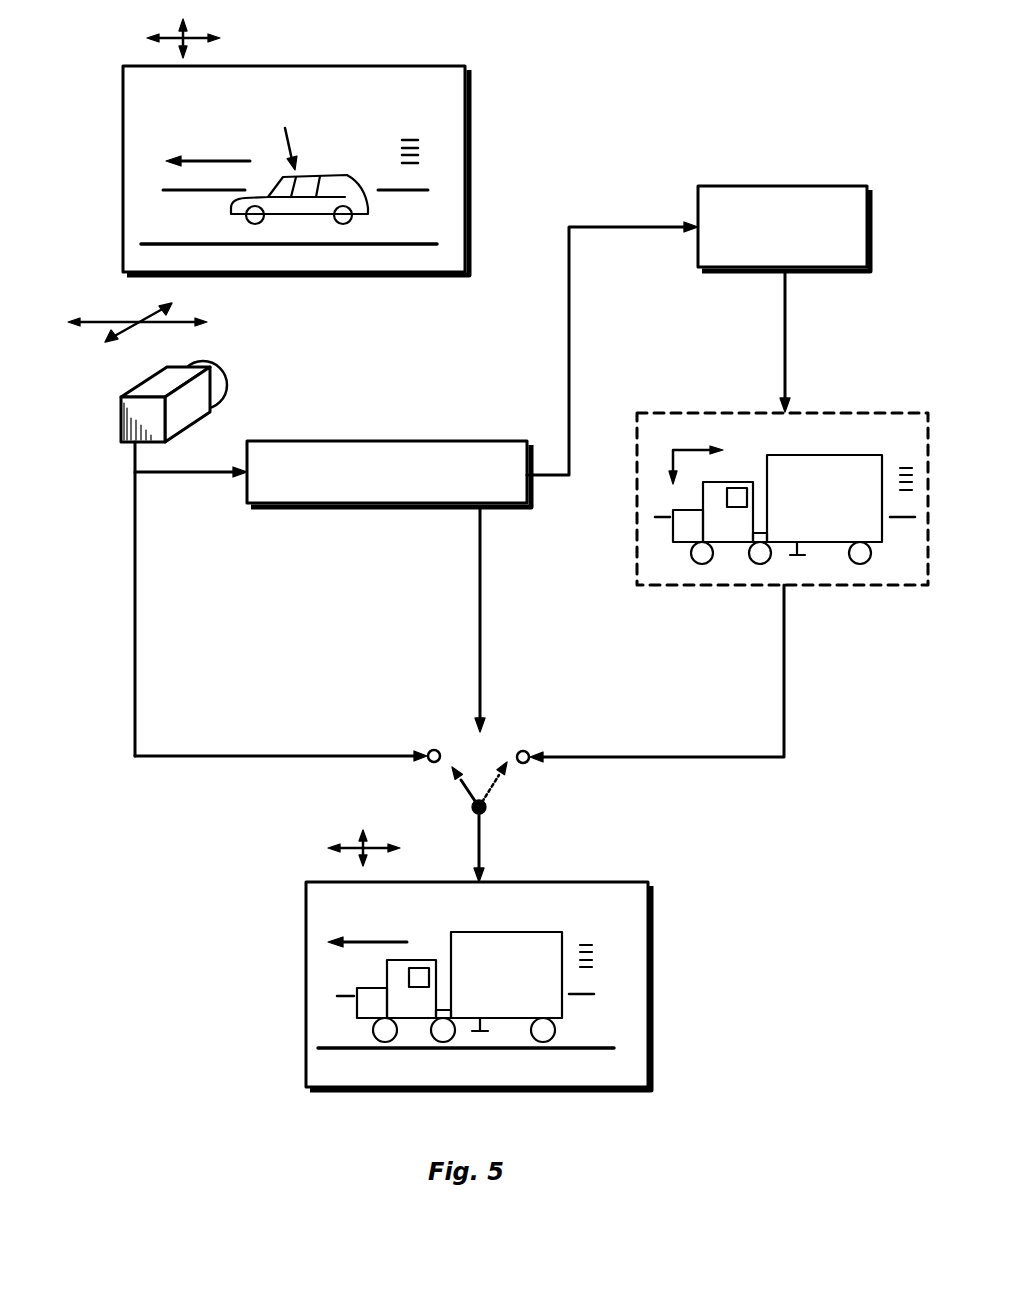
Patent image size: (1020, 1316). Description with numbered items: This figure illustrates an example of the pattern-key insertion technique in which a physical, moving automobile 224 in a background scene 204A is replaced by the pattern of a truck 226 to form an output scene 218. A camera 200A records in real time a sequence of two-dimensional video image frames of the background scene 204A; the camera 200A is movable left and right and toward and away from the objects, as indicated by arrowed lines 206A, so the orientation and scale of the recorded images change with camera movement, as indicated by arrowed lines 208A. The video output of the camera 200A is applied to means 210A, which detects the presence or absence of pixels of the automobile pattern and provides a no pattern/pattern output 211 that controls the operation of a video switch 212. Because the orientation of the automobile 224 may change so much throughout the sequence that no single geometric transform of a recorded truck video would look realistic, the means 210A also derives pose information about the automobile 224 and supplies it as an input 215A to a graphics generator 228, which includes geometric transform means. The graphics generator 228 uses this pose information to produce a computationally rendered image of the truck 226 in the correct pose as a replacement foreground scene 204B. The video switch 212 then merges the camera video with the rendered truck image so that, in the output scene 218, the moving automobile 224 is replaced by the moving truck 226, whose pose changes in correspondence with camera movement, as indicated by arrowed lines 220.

The camera 200A is at (228, 378).
The background scene 204A is at (296, 209).
The foreground scene 204B is at (782, 540).
The arrowed lines 206A is at (150, 316).
The arrowed lines 208A is at (195, 36).
The means 210A is at (245, 493).
The no pattern A/pattern A output 211 is at (478, 630).
The video switch 212 is at (462, 787).
The input 215A is at (569, 382).
The output scene 218 is at (651, 940).
The arrowed lines 220 is at (352, 845).
The automobile 224 is at (314, 172).
The truck 226 is at (805, 455).
The graphics generator 228 is at (698, 255).